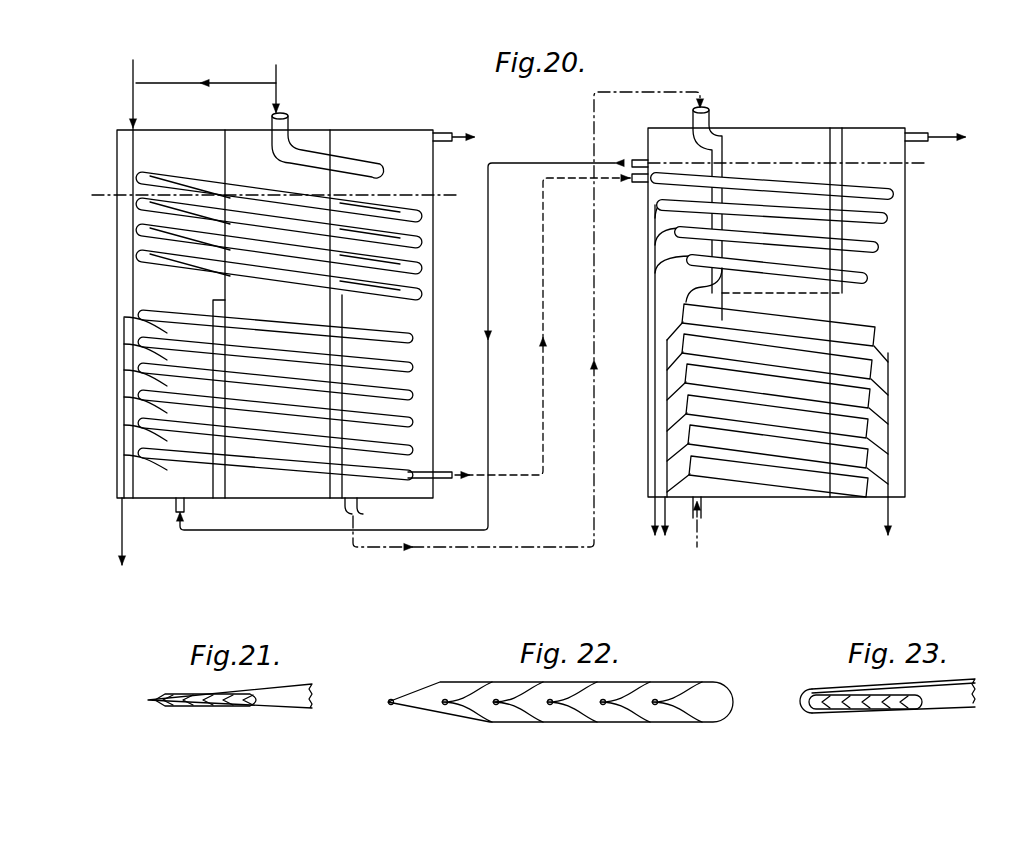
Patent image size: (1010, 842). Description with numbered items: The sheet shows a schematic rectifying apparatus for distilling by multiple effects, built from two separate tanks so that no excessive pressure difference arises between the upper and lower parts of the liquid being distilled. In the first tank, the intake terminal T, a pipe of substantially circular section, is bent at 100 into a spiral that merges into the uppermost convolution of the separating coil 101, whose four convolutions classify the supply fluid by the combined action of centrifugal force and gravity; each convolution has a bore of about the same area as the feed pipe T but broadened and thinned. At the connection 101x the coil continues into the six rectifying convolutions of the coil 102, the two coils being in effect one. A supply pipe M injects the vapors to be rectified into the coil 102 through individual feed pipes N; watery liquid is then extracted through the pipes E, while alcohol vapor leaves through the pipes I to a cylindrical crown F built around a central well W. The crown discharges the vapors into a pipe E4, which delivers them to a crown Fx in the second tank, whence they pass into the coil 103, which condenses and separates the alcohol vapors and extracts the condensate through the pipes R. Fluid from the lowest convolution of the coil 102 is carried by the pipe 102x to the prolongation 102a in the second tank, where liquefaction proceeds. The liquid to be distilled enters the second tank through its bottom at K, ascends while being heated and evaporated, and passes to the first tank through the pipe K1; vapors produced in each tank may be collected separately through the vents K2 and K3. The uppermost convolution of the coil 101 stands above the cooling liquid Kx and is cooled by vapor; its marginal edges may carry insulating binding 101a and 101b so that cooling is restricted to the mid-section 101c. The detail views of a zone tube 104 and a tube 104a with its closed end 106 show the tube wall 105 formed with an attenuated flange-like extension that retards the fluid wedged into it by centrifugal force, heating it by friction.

In FIG. 20, the spiral bend 100 is at (280, 144).
In FIG. 20, the separating coil 101 is at (110, 215).
In FIG. 23, the separating coil 101 is at (820, 699).
In FIG. 20, the connection 101x is at (212, 310).
In FIG. 20, the rectifying coil 102 is at (110, 382).
In FIG. 20, the transfer pipe 102x is at (446, 471).
In FIG. 20, the prolongation of coil 102a is at (675, 183).
In FIG. 20, the condensing coil 103 is at (914, 397).
In FIG. 21, the tube with helical insert 104 is at (192, 713).
In FIG. 22, the tube with deflecting blades 104a is at (492, 678).
In FIG. 22, the tube wall 105 is at (393, 706).
In FIG. 22, the closed tube end 106 is at (704, 690).
In FIG. 23, the insulating binding 101a is at (936, 710).
In FIG. 23, the insulating binding 101b is at (807, 712).
In FIG. 23, the mid-section of convolution 101c is at (870, 714).
In FIG. 20, the supply pipe M is at (128, 127).
In FIG. 20, the intake terminal T is at (285, 126).
In FIG. 20, the central well W is at (314, 133).
In FIG. 20, the vent K2 is at (442, 132).
In FIG. 20, the cooling liquid Kx is at (385, 195).
In FIG. 20, the alcohol vapor pipes I is at (210, 307).
In FIG. 20, the cylindrical crown F is at (226, 308).
In FIG. 20, the feed pipes N is at (167, 331).
In FIG. 20, the water extraction pipes E is at (120, 528).
In FIG. 20, the transfer pipe K1 is at (172, 508).
In FIG. 20, the vapor pipe E4 is at (344, 512).
In FIG. 20, the crown Fx is at (722, 158).
In FIG. 20, the vent K3 is at (917, 131).
In FIG. 20, the condensate pipes R is at (667, 340).
In FIG. 20, the bottom inlet K is at (703, 509).